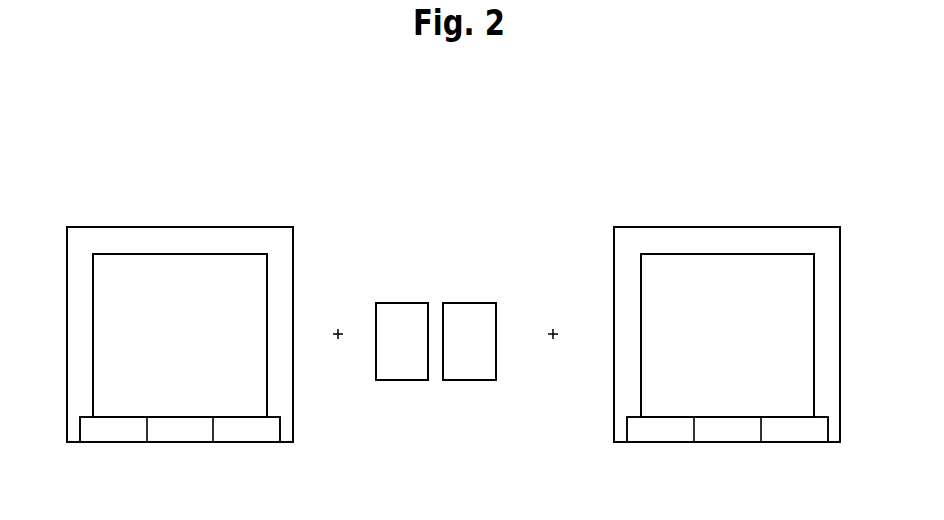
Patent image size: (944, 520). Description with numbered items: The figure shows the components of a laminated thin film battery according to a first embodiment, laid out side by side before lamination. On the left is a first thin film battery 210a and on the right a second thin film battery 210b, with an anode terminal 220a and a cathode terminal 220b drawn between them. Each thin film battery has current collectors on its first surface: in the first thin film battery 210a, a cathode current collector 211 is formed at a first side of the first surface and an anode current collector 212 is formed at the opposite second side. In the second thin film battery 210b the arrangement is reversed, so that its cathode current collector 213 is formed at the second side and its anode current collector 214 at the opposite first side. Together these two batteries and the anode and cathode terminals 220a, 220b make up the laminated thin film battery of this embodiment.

The first thin film battery 210a is at (186, 210).
The second thin film battery 210b is at (694, 210).
The cathode current collector 211 is at (112, 443).
The anode current collector 212 is at (216, 443).
The cathode current collector 213 is at (770, 443).
The anode current collector 214 is at (665, 443).
The anode terminal 220a is at (402, 373).
The cathode terminal 220b is at (468, 373).